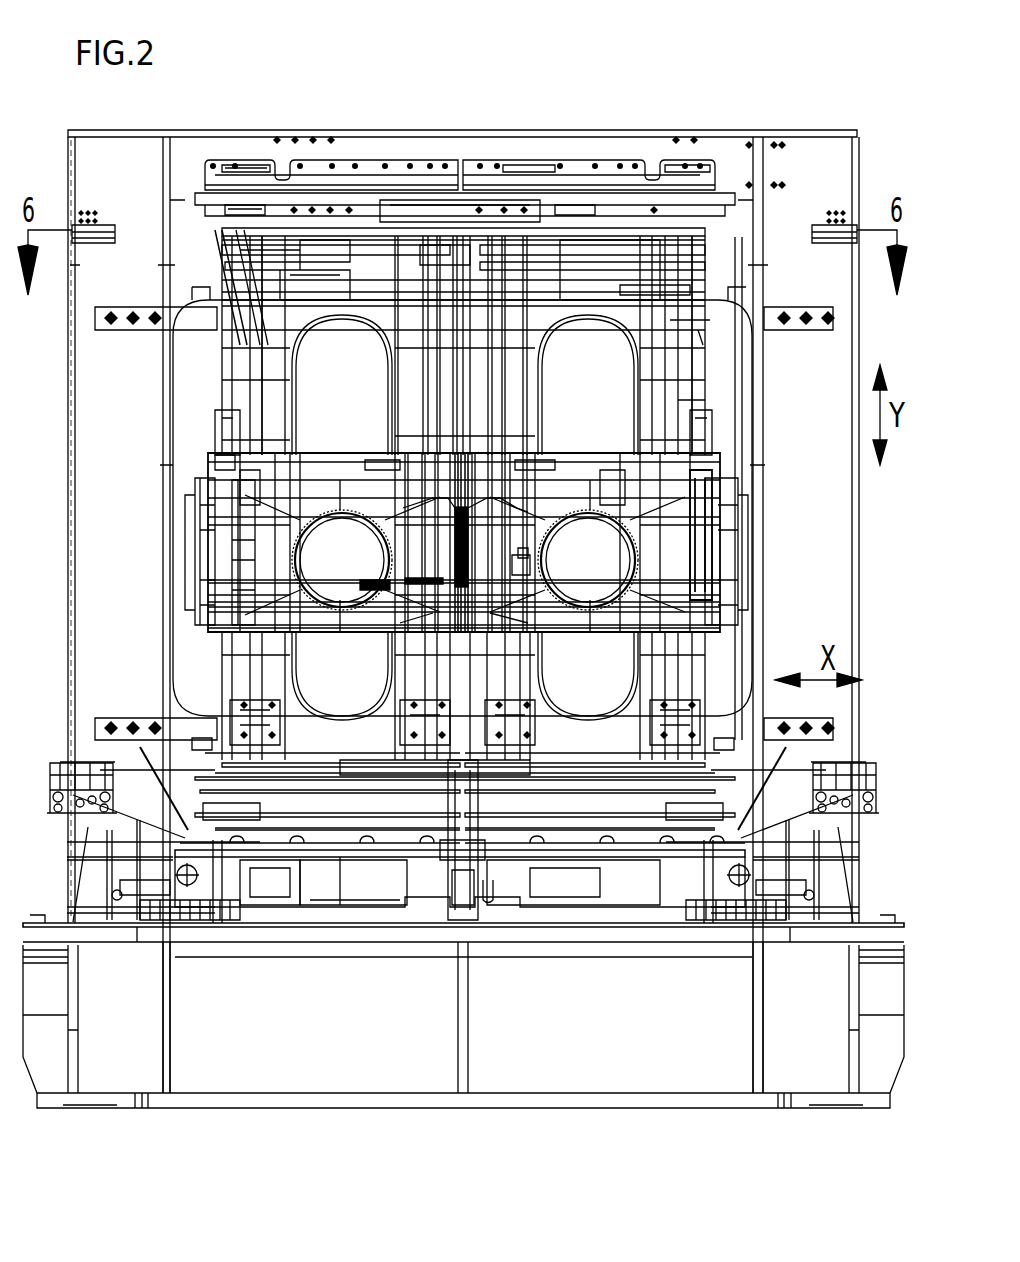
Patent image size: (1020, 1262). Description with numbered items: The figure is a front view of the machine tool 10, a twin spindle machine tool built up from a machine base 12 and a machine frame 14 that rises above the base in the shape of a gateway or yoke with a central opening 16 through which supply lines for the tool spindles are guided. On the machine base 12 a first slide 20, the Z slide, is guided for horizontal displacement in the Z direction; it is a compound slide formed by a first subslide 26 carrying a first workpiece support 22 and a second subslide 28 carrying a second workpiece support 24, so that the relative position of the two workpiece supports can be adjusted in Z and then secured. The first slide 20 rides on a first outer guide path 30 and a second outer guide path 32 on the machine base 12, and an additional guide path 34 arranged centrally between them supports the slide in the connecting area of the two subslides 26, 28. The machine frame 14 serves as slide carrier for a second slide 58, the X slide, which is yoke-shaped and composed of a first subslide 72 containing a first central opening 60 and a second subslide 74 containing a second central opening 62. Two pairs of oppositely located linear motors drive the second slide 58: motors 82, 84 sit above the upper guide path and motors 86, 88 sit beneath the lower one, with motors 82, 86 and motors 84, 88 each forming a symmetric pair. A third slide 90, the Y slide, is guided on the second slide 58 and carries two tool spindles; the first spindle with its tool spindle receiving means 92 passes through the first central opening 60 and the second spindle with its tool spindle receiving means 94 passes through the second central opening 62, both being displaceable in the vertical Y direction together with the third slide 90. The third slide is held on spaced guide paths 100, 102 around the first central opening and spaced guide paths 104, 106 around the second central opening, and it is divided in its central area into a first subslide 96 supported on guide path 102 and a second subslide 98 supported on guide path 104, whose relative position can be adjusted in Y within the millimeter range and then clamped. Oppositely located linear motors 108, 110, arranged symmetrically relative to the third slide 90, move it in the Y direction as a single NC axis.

The machine tool 10 is at (777, 98).
The machine base 12 is at (620, 1022).
The machine frame 14 is at (838, 180).
The central opening 16 is at (735, 405).
The first slide 20 is at (330, 886).
The first workpiece support 22 is at (557, 790).
The second workpiece support 24 is at (325, 790).
The first subslide 26 is at (538, 878).
The second subslide 28 is at (290, 880).
The first outer guide path 30 is at (265, 830).
The second outer guide path 32 is at (665, 853).
The additional guide path 34 is at (460, 850).
The second slide 58 is at (235, 385).
The first central opening 60 is at (262, 420).
The second central opening 62 is at (700, 320).
The first subslide 72 is at (358, 246).
The second subslide 74 is at (580, 268).
The motor 82 is at (305, 170).
The motor 84 is at (622, 165).
The motor 86 is at (365, 795).
The motor 88 is at (613, 797).
The third slide 90 is at (720, 485).
The tool spindle receiving means 92 is at (357, 576).
The tool spindle receiving means 94 is at (566, 556).
The first subslide 96 is at (245, 320).
The second subslide 98 is at (705, 370).
The guide path 100 is at (247, 533).
The guide path 102 is at (420, 405).
The guide path 104 is at (505, 403).
The guide path 106 is at (705, 440).
The motor 108 is at (195, 508).
The motor 110 is at (730, 545).